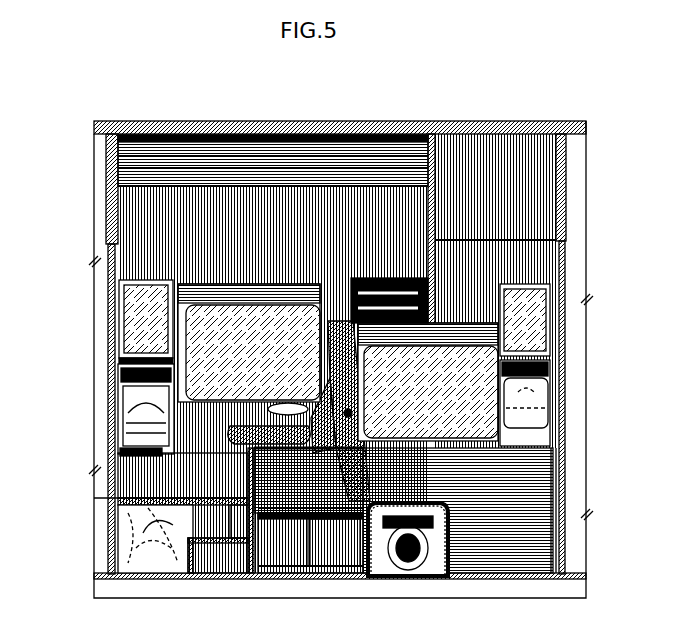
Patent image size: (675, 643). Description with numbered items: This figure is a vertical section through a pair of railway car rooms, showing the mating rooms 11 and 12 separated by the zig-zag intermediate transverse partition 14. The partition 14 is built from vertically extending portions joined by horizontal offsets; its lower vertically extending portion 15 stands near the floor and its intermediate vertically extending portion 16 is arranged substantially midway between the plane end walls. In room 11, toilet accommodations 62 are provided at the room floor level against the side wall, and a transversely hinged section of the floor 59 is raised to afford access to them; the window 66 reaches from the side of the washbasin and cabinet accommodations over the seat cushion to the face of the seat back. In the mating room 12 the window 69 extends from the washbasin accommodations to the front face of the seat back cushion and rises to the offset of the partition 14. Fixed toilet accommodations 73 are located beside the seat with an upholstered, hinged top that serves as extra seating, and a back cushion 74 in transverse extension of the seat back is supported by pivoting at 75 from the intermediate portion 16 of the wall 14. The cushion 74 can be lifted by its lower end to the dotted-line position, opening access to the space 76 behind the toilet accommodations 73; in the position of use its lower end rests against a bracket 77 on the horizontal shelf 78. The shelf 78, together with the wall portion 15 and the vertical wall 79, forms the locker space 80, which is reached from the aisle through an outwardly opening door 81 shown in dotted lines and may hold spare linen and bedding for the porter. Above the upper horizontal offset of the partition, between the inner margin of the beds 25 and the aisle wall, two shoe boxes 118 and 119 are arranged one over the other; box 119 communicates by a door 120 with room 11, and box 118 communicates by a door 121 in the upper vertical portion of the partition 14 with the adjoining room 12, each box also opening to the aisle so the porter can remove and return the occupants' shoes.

The room 11 is at (243, 233).
The mating room 12 is at (495, 203).
The intermediate transverse partition 14 is at (427, 175).
The lower vertically extending portion 15 is at (238, 536).
The intermediate vertically extending portion 16 is at (318, 362).
The beds 25 is at (306, 142).
The floor 59 is at (200, 498).
The toilet accommodations 62 is at (142, 503).
The window 66 is at (233, 336).
The window 69 is at (426, 370).
The fixed toilet accommodations 73 is at (418, 570).
The back cushion 74 is at (372, 462).
The pivot 75 is at (344, 404).
The space behind the toilet accommodations 76 is at (308, 480).
The bracket 77 is at (342, 494).
The horizontal shelf 78 is at (293, 502).
The vertical wall 79 is at (354, 541).
The locker space 80 is at (303, 550).
The outwardly opening door 81 is at (310, 566).
The shoe box 118 is at (404, 140).
The shoe box 119 is at (437, 357).
The door 120 is at (267, 140).
The door 121 is at (339, 140).